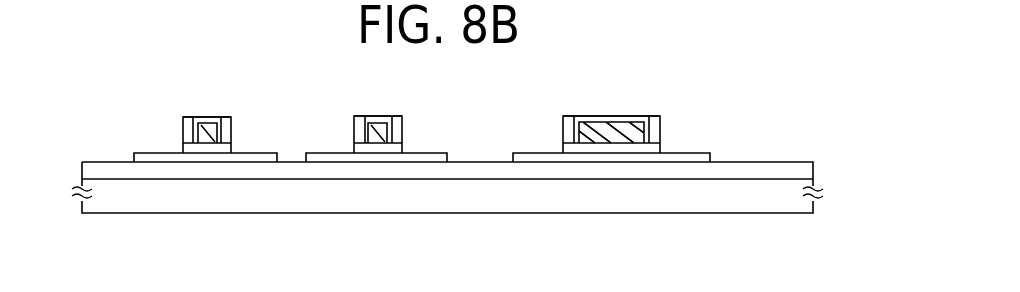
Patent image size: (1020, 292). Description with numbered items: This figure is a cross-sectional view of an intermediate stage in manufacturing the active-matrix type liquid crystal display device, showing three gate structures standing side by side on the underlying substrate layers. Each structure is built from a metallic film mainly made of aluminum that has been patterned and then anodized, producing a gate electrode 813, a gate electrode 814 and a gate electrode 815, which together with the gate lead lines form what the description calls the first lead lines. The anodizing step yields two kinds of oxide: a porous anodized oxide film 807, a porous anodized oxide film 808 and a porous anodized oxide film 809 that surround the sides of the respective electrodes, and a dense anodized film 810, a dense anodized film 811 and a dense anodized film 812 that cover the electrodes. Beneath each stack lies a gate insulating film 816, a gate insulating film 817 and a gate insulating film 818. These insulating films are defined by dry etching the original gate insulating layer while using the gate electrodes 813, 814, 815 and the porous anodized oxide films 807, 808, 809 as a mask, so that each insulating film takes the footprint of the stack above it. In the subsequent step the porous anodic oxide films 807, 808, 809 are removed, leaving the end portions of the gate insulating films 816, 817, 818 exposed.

The porous anodized oxide film 807 is at (223, 132).
The porous anodized oxide film 808 is at (397, 128).
The porous anodized oxide film 809 is at (655, 132).
The dense anodized film 810 is at (207, 117).
The dense anodized film 811 is at (378, 115).
The dense anodized film 812 is at (607, 116).
The gate electrode 813 is at (207, 133).
The gate electrode 814 is at (375, 140).
The gate electrode 815 is at (600, 143).
The gate insulating film 816 is at (222, 149).
The gate insulating film 817 is at (390, 148).
The gate insulating film 818 is at (628, 147).